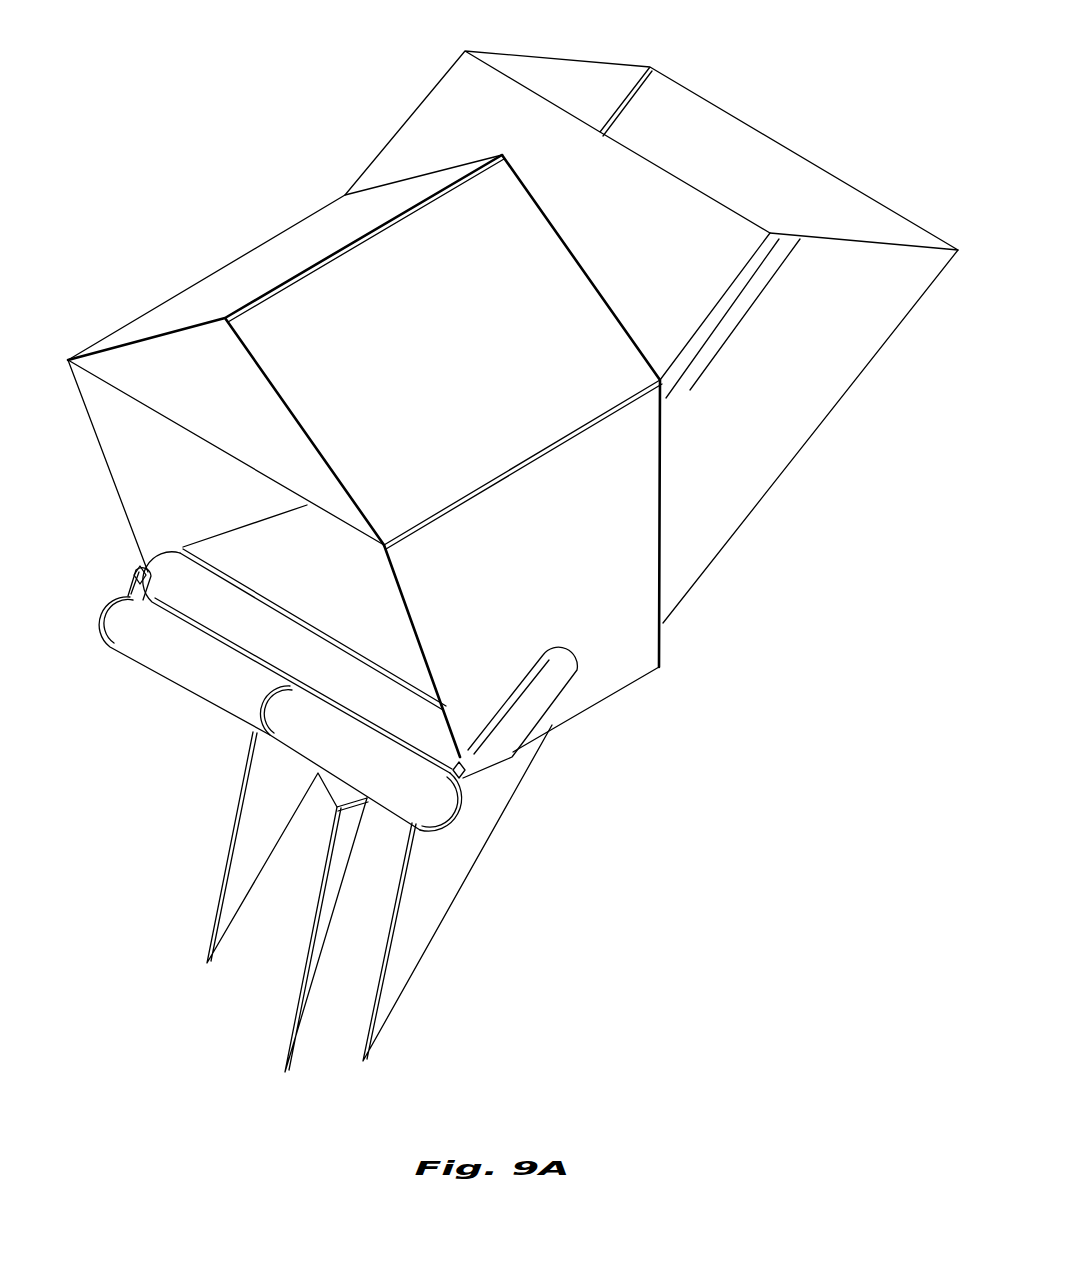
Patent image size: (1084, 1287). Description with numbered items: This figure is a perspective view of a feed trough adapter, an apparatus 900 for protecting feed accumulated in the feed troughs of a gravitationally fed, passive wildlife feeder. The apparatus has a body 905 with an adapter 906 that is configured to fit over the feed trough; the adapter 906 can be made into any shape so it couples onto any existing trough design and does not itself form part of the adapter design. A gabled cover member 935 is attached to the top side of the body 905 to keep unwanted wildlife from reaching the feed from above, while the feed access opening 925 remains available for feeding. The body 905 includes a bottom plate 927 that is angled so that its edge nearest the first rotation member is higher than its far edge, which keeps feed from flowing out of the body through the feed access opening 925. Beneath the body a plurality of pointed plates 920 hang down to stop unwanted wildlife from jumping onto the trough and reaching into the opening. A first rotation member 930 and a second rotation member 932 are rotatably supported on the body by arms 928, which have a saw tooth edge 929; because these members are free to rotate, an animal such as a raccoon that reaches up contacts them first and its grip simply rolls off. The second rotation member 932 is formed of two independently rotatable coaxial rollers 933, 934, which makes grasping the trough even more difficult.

The apparatus 900 is at (262, 148).
The body 905 is at (592, 638).
The adapter 906 is at (756, 377).
The pointed plates 920 is at (245, 825).
The feed access opening 925 is at (182, 486).
The bottom plate 927 is at (317, 587).
The arms 928 is at (120, 594).
The saw tooth edge 929 is at (138, 578).
The first rotation member 930 is at (280, 664).
The second rotation member 932 is at (197, 698).
The independently rotatable coaxial roller 933 is at (186, 680).
The independently rotatable coaxial roller 934 is at (309, 754).
The gabled cover member 935 is at (250, 275).